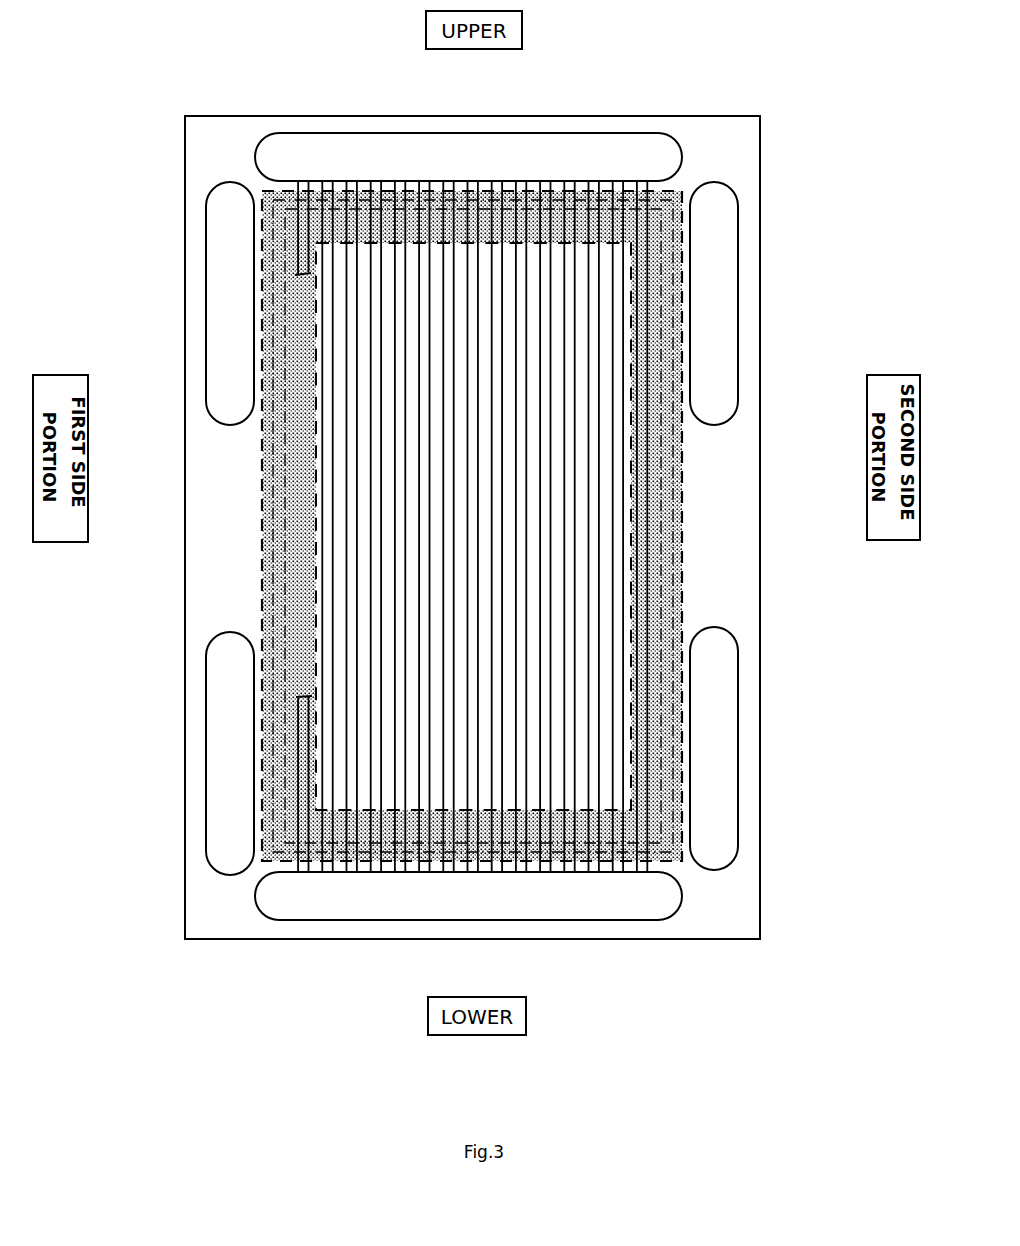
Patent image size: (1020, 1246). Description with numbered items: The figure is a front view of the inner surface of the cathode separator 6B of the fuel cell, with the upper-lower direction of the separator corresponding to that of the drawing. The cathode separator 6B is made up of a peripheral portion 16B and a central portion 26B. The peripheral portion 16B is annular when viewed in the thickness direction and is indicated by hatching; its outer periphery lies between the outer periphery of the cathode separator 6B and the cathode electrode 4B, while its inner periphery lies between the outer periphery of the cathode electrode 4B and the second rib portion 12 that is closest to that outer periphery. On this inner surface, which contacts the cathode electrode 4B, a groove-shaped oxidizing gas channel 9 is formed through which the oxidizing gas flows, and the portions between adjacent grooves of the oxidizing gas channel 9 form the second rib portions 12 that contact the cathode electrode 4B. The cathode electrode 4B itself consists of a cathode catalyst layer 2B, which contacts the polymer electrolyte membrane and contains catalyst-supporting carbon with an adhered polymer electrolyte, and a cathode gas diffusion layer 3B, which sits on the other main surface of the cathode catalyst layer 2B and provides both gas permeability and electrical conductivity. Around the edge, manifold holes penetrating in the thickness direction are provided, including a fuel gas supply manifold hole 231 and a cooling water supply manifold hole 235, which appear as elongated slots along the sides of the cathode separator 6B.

The cathode separator 6B is at (655, 68).
The second rib portion 12 is at (318, 233).
The fuel gas supply manifold hole 231 is at (222, 284).
The cooling water supply manifold hole 235 is at (722, 292).
The cathode electrode 4B is at (678, 449).
The cathode catalyst layer 2B is at (673, 488).
The cathode gas diffusion layer 3B is at (665, 544).
The oxidizing gas channel 9 is at (648, 609).
The central portion 26B is at (230, 560).
The peripheral portion 16B is at (298, 609).